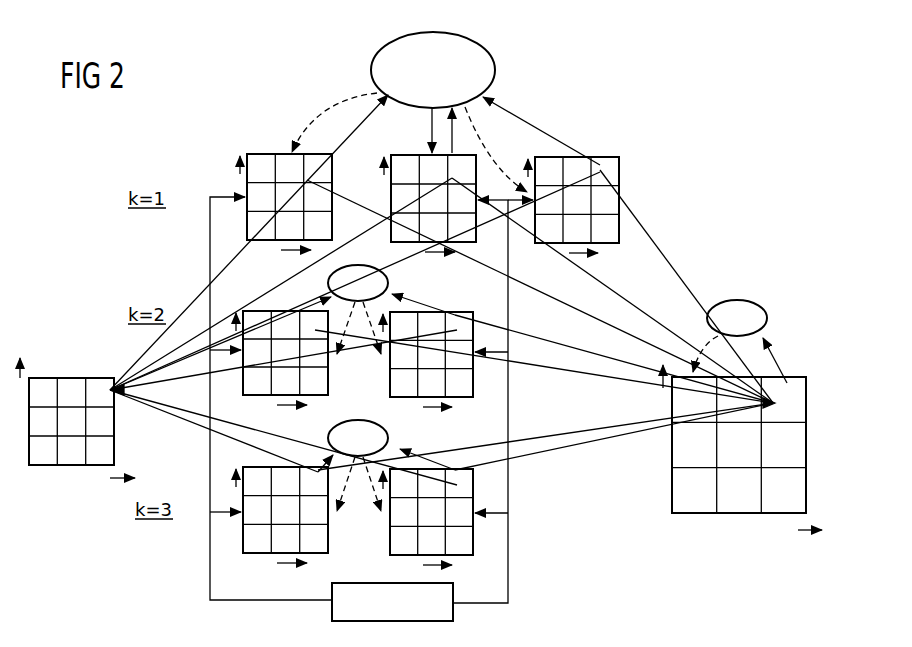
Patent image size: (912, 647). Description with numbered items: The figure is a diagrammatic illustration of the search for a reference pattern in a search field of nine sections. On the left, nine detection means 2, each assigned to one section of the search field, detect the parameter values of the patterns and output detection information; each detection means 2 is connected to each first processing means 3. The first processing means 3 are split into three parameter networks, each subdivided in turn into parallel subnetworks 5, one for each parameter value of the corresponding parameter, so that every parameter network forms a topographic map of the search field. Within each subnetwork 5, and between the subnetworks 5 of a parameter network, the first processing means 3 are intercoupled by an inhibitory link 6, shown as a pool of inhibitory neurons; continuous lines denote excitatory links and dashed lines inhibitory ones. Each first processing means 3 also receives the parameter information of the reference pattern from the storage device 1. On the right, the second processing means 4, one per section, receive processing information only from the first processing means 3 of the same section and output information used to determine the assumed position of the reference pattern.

The storage device 1 is at (386, 611).
The detection means 2 is at (79, 422).
The first processing means 3 is at (431, 339).
The second processing means 4 is at (743, 447).
The subnetwork 5 is at (332, 220).
The inhibitory link 6 is at (494, 62).